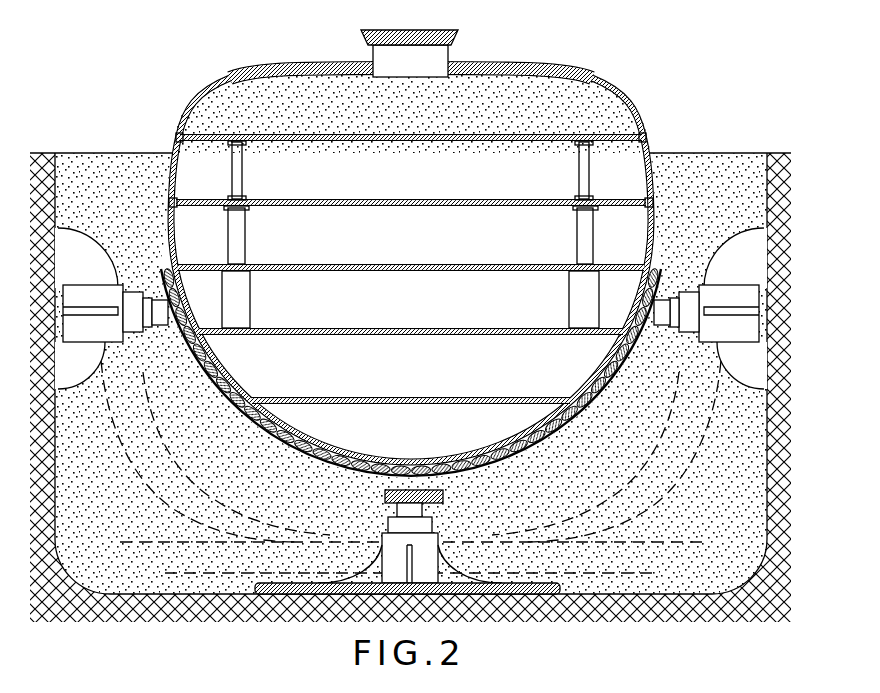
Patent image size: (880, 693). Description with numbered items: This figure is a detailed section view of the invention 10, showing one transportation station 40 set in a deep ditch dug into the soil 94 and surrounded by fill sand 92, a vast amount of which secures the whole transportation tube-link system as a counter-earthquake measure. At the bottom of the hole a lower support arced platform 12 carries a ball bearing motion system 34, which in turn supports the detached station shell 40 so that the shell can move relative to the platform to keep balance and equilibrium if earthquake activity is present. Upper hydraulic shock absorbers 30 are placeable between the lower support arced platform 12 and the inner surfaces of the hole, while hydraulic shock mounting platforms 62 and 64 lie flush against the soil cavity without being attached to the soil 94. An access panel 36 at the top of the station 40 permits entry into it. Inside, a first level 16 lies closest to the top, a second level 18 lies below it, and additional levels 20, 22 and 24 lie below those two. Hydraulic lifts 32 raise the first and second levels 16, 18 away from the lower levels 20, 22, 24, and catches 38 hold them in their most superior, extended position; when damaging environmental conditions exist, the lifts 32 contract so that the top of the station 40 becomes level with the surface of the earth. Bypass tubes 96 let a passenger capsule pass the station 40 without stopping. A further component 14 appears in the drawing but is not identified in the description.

The underground storage system 10 is at (561, 52).
The lower support arced platform 12 is at (168, 264).
The tank sidewall 14 is at (168, 231).
The first level 16 is at (376, 134).
The second level 18 is at (328, 199).
The additional level 20 is at (403, 263).
The additional level 22 is at (448, 328).
The additional level 24 is at (411, 396).
The upper hydraulic shock absorbers 30 is at (93, 358).
The hydraulic lifts 32 is at (577, 235).
The ball bearing motion system 34 is at (226, 376).
The access panel 36 is at (450, 36).
The catches 38 is at (180, 134).
The transportation station 40 is at (276, 66).
The hydraulic shock mounting platform 62 is at (512, 583).
The hydraulic shock mounting platform 64 is at (74, 231).
The fill sand 92 is at (70, 153).
The soil 94 is at (32, 210).
The bypass tube 96 is at (410, 429).